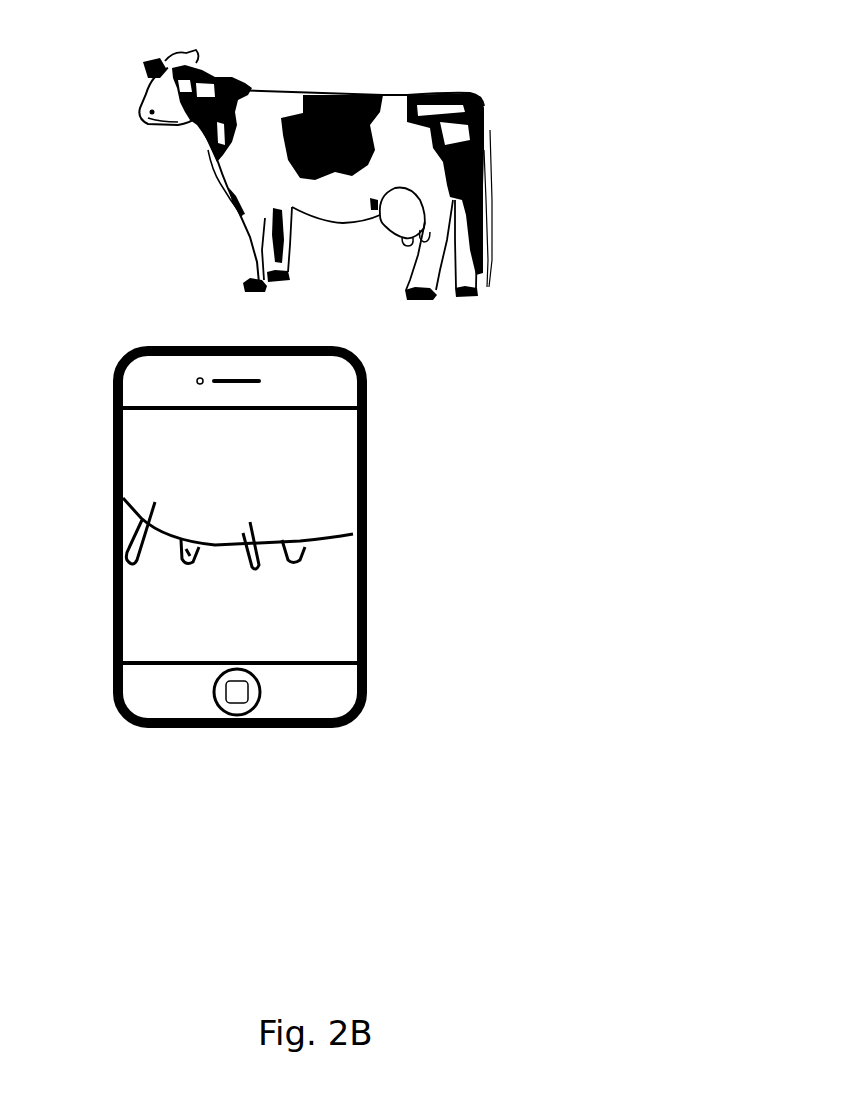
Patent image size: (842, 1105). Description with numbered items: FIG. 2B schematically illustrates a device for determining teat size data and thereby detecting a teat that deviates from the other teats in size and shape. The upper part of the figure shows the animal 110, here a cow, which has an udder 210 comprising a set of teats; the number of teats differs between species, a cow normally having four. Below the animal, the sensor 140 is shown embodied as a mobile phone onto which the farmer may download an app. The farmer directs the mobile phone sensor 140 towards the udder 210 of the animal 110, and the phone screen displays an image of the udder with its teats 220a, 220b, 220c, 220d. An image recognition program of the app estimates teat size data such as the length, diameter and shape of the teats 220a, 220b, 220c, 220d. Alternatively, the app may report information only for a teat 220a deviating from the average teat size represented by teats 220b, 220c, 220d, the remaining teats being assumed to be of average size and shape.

The animal 110 is at (388, 97).
The udder 210 is at (400, 213).
The sensor 140 is at (113, 433).
The teat 220a is at (300, 552).
The teat 220b is at (143, 541).
The teat 220c is at (181, 548).
The teat 220d is at (257, 548).